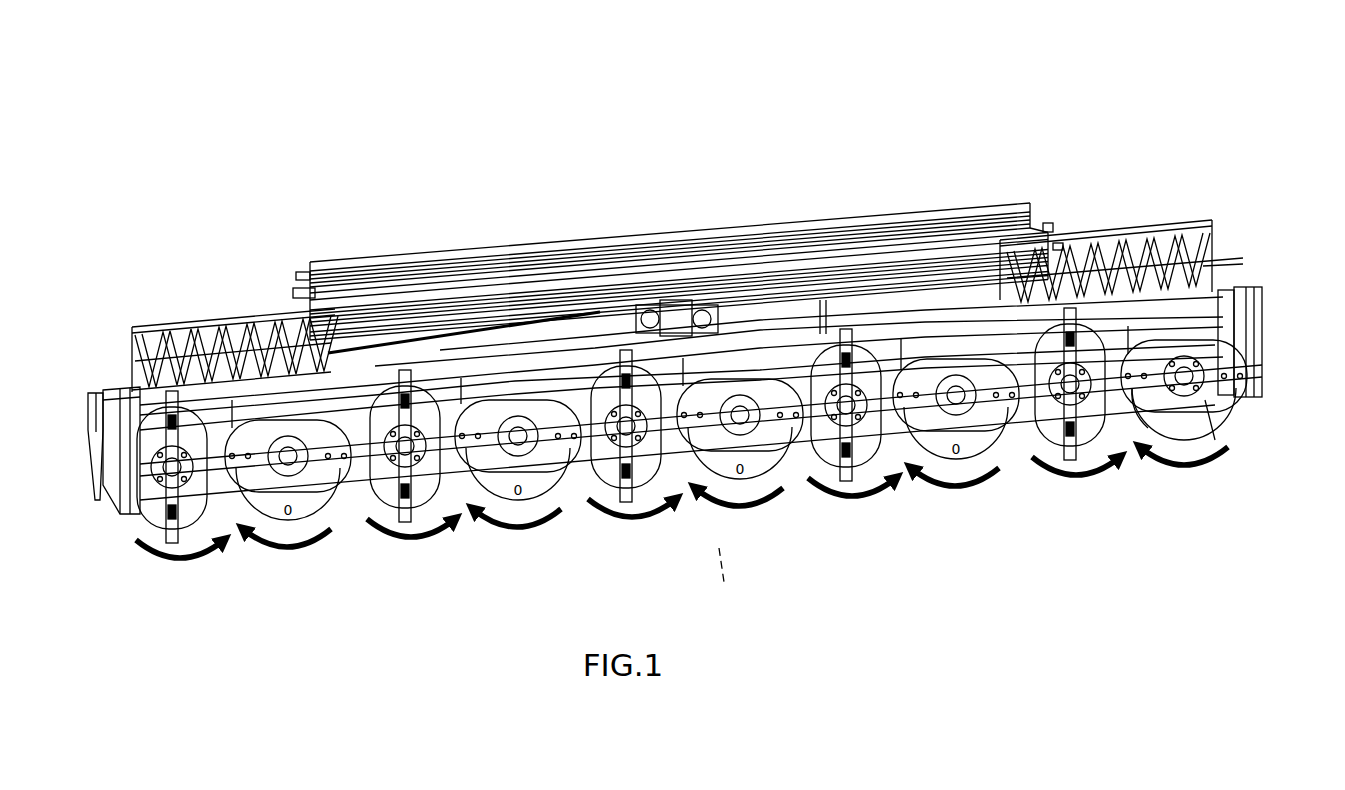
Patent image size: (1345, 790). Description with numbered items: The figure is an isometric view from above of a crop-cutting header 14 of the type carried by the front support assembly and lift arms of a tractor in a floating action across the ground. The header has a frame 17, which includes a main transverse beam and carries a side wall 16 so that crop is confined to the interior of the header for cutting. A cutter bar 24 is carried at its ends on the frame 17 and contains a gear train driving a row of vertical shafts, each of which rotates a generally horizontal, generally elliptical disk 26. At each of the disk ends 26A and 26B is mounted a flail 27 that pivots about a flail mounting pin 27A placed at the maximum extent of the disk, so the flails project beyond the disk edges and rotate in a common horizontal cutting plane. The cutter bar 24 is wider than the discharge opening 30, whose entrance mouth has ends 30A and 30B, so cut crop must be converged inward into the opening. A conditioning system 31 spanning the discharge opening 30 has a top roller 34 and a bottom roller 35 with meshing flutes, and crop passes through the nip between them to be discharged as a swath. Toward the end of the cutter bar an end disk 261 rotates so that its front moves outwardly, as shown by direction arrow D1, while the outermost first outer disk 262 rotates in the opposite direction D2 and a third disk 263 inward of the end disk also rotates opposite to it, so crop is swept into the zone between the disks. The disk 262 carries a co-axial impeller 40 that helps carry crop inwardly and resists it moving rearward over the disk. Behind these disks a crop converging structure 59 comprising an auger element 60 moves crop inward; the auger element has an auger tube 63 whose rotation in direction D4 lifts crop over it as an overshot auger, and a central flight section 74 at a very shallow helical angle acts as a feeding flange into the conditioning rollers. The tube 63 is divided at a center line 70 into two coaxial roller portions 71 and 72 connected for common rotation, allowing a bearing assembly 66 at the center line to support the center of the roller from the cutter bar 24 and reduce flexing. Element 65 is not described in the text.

The header 14 is at (888, 192).
The side wall 16 is at (100, 410).
The frame 17 is at (115, 370).
The cutter bar 24 is at (577, 472).
The disk 26 is at (502, 472).
The end of disk 26A is at (1123, 440).
The end of disk 26B is at (1216, 380).
The flail 27 is at (1256, 372).
The flail mounting pin 27A is at (1210, 455).
The discharge opening 30 is at (724, 200).
The end of entrance mouth 30A is at (304, 258).
The end of entrance mouth 30B is at (1053, 222).
The conditioning system 31 is at (968, 200).
The top roller 34 is at (767, 222).
The bottom roller 35 is at (920, 265).
The impeller 40 is at (1207, 418).
The crop converging structure 59 is at (1190, 238).
The auger element 60 is at (1128, 240).
The auger tube 63 is at (793, 442).
The drive gearbox 65 is at (684, 262).
The bearing assembly 66 is at (656, 302).
The center line 70 is at (724, 582).
The roller portion 71 is at (537, 330).
The roller portion 72 is at (822, 300).
The flight section 74 is at (976, 300).
The end disk 261 is at (1046, 455).
The first outer disk 262 is at (1128, 447).
The third disk 263 is at (918, 465).
The direction arrow D1 is at (1036, 470).
The direction arrow D2 is at (1222, 475).
The direction arrow D4 is at (1142, 232).